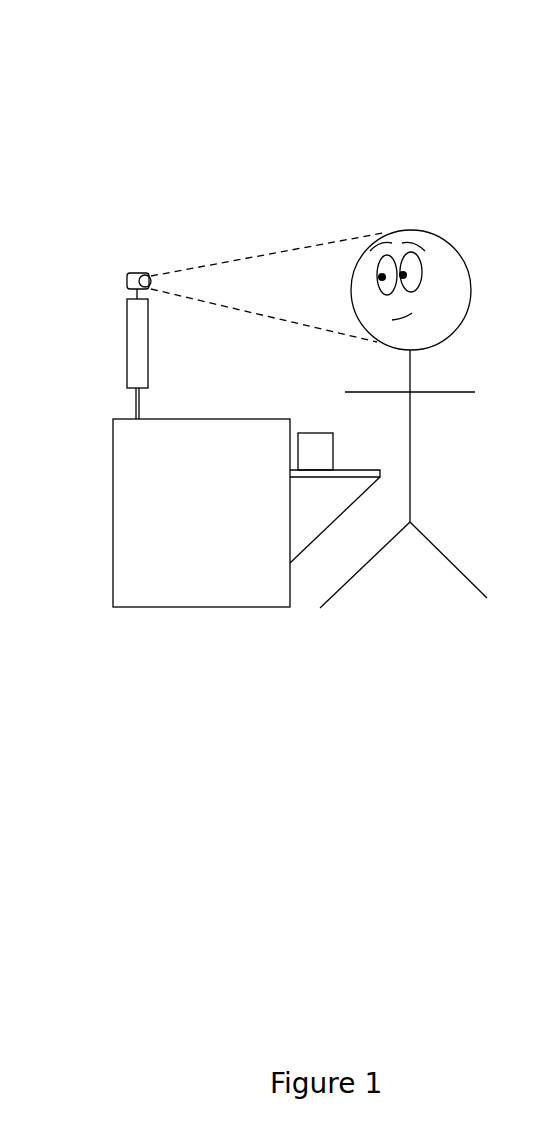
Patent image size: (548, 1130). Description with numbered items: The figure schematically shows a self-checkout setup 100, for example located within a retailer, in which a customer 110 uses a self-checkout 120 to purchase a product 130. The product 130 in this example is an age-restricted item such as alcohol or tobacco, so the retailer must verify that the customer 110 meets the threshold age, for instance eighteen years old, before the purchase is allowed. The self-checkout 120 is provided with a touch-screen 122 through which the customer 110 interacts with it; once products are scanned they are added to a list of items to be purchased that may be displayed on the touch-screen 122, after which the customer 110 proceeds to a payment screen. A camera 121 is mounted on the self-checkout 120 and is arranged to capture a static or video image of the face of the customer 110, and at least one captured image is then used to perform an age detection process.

The self-checkout setup 100 is at (213, 107).
The customer 110 is at (446, 240).
The self-checkout 120 is at (112, 580).
The camera 121 is at (130, 272).
The touch-screen 122 is at (126, 386).
The product 130 is at (334, 462).